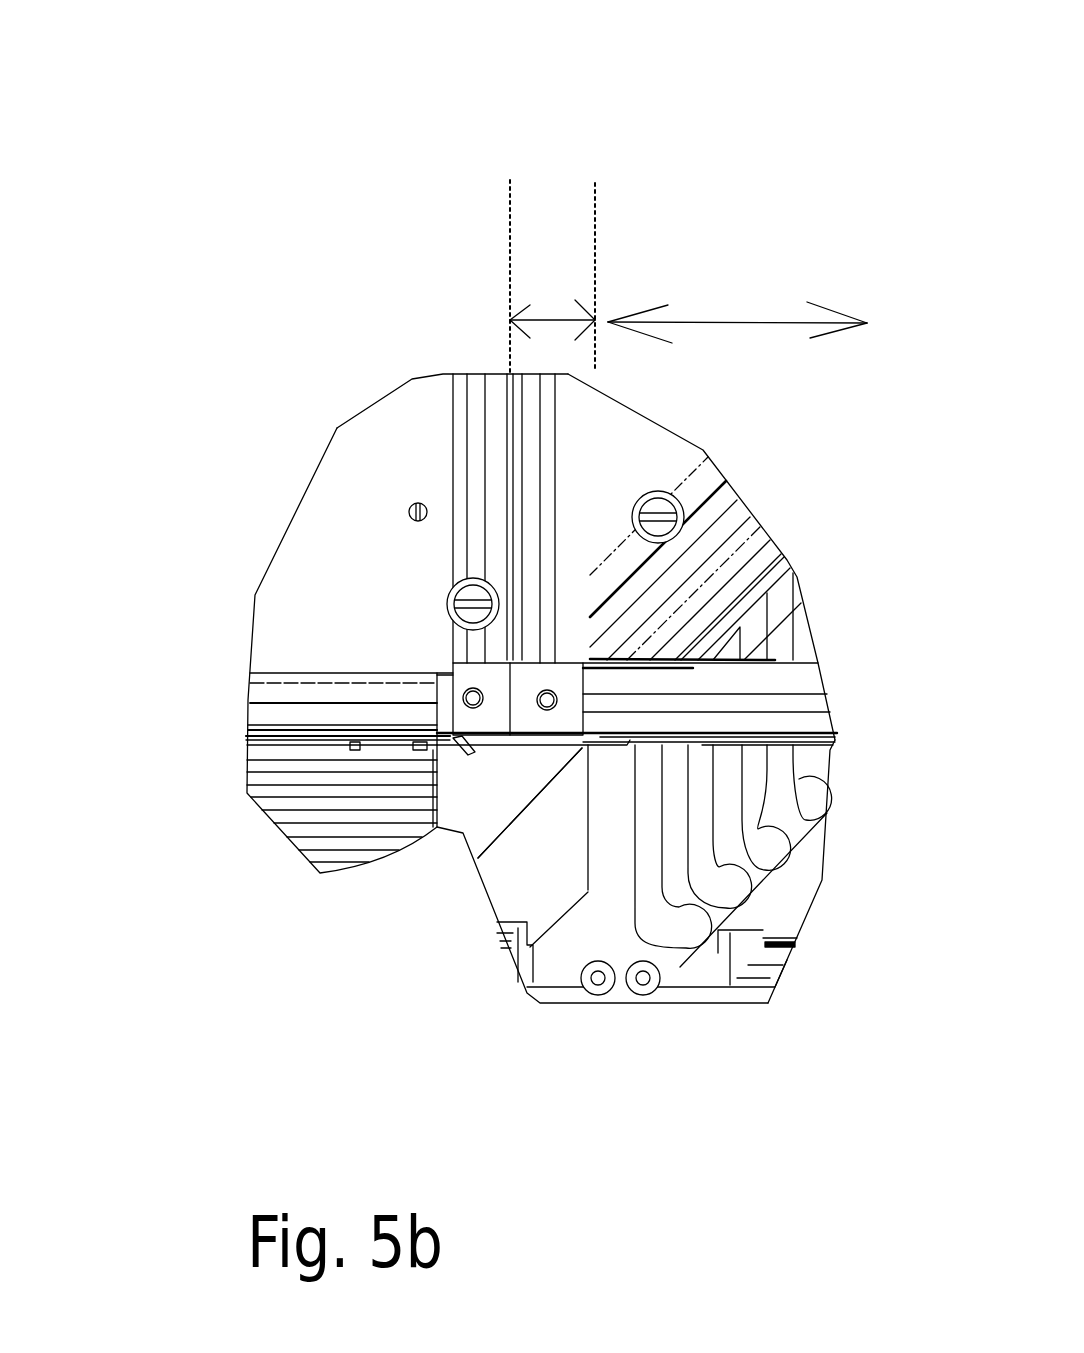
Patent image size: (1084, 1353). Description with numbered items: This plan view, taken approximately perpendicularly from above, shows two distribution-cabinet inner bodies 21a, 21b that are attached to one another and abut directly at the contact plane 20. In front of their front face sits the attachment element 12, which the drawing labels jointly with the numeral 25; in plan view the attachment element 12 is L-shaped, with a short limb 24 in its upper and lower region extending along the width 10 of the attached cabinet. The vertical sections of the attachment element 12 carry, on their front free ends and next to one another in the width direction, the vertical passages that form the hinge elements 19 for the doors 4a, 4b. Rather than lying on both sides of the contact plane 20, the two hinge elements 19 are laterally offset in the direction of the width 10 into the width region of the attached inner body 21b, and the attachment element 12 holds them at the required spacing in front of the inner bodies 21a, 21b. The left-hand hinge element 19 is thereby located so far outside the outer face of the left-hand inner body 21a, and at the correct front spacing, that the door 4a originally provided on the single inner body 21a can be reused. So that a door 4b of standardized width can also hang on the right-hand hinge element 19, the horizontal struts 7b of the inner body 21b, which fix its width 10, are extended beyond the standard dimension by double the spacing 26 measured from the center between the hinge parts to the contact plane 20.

The inner body 21a is at (373, 360).
The inner body 21b is at (755, 484).
The contact plane 20 is at (512, 205).
The spacing 26 is at (552, 292).
The width 10 is at (723, 322).
The short limb 24 is at (500, 737).
The horizontal struts 7b is at (637, 710).
The door 4a is at (523, 995).
The door 4b is at (703, 997).
The insert 25 is at (598, 897).
The attachment element 12 is at (598, 897).
The hinge elements 19 is at (643, 978).